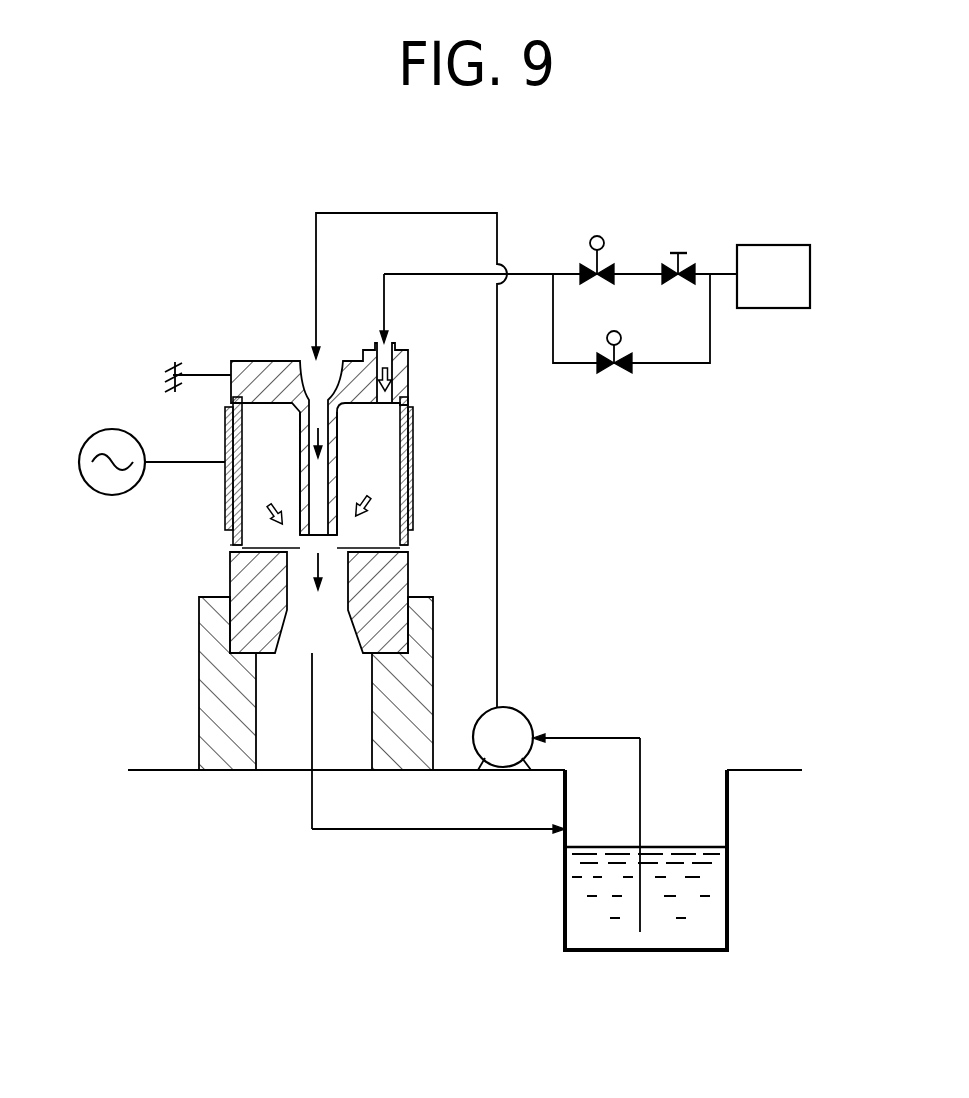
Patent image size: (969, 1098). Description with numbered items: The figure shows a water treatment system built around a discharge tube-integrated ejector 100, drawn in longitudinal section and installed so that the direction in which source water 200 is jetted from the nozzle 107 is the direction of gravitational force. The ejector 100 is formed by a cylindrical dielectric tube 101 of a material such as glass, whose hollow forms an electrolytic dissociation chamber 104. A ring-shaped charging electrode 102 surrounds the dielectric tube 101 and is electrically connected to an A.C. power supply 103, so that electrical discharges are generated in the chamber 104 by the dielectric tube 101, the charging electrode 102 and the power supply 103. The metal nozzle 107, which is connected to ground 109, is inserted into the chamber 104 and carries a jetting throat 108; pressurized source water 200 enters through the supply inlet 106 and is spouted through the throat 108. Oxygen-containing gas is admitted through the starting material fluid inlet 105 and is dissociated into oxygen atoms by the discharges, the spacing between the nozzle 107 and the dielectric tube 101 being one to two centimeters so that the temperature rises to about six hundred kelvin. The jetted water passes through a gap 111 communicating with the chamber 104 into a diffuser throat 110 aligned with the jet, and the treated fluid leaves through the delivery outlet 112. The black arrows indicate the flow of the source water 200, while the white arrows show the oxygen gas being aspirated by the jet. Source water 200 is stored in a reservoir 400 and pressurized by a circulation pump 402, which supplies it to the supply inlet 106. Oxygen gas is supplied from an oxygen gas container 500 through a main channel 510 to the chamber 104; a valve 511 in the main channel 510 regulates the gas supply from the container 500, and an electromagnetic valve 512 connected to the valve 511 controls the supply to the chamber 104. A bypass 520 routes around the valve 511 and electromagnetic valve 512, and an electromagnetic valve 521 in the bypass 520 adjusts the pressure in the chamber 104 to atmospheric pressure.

The discharge tube-integrated ejector 100 is at (448, 372).
The dielectric tube 101 is at (410, 470).
The charging electrode 102 is at (413, 418).
The A.C. power supply 103 is at (86, 483).
The electrolytic dissociation chamber 104 is at (375, 535).
The starting material fluid inlet 105 is at (392, 343).
The supply inlet 106 is at (305, 358).
The nozzle 107 is at (297, 427).
The jetting throat 108 is at (322, 530).
The ground 109 is at (179, 372).
The diffuser throat 110 is at (345, 582).
The gap 111 is at (265, 541).
The delivery outlet 112 is at (338, 656).
The source water 200 is at (578, 916).
The reservoir 400 is at (729, 888).
The circulation pump 402 is at (528, 719).
The oxygen gas container 500 is at (786, 245).
The main channel 510 is at (531, 274).
The valve 511 is at (681, 251).
The electromagnetic valve 512 is at (603, 239).
The bypass 520 is at (690, 364).
The electromagnetic valve 521 is at (614, 367).